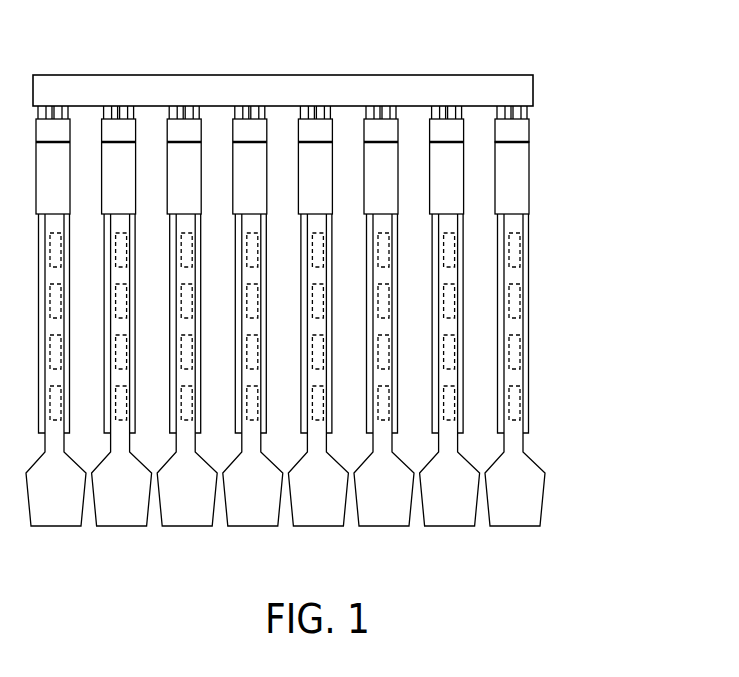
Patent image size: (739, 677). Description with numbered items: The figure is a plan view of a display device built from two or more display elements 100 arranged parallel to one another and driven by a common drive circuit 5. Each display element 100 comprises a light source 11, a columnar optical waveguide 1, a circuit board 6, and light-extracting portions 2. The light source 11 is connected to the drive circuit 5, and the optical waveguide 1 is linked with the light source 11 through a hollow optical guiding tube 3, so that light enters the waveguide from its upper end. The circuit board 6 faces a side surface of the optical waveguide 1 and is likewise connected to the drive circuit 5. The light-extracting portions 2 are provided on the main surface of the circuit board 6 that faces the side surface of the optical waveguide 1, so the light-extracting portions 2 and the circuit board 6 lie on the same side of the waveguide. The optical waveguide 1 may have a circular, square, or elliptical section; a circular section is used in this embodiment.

The display element 100 is at (338, 327).
The drive circuit 5 is at (533, 87).
The light source 11 is at (520, 131).
The hollow optical guiding tube 3 is at (520, 183).
The circuit board 6 is at (530, 351).
The columnar optical waveguide 1 is at (515, 443).
The light-extracting portion 2 is at (512, 305).